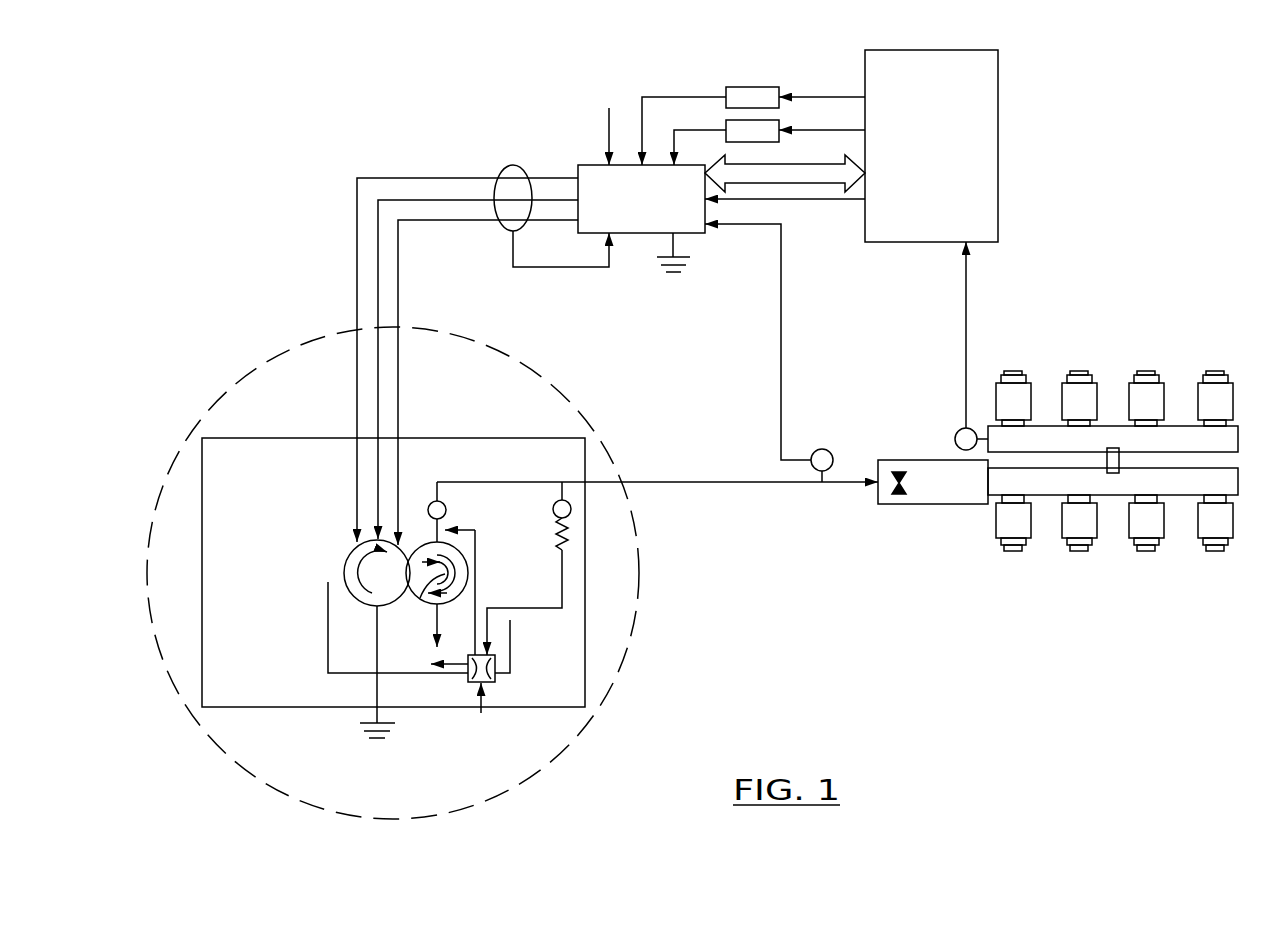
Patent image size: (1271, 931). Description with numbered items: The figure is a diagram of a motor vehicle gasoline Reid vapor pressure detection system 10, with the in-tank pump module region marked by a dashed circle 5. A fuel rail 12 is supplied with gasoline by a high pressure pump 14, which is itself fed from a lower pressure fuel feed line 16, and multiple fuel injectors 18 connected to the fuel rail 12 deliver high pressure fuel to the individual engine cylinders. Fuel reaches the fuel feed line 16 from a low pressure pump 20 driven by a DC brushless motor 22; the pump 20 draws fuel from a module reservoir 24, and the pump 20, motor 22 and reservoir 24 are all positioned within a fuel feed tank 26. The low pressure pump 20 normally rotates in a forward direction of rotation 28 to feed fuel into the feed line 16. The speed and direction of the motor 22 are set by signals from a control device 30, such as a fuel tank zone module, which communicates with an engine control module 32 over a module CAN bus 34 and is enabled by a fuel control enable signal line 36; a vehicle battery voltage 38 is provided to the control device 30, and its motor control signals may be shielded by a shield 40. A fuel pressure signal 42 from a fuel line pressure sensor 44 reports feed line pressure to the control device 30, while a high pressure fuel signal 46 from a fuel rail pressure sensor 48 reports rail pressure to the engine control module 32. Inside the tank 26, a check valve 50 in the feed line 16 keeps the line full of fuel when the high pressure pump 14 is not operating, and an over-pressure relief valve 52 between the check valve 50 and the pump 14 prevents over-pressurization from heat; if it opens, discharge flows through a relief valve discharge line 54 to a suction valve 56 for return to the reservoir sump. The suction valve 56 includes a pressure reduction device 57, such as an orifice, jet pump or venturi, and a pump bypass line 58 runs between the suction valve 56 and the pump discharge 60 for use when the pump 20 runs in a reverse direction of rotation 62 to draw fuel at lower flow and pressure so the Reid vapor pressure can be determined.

The gasoline RVP detection system 10 is at (1185, 130).
The pump module 5 is at (580, 410).
The fuel rail 12 is at (997, 483).
The high pressure pump 14 is at (937, 488).
The fuel feed line 16 is at (673, 480).
The fuel injectors 18 is at (1064, 403).
The low pressure pump 20 is at (420, 553).
The DC brushless motor 22 is at (372, 592).
The module reservoir 24 is at (328, 618).
The fuel feed tank 26 is at (457, 437).
The forward direction of rotation 28 is at (443, 587).
The control device 30 is at (634, 207).
The engine control module 32 is at (975, 121).
The module CAN bus 34 is at (797, 173).
The fuel control enable signal line 36 is at (850, 199).
The vehicle battery voltage 38 is at (609, 128).
The shield 40 is at (502, 232).
The fuel pressure signal 42 is at (781, 316).
The fuel line pressure sensor 44 is at (833, 458).
The high pressure fuel signal 46 is at (967, 300).
The fuel rail pressure sensor 48 is at (955, 437).
The check valve 50 is at (446, 510).
The over-pressure relief valve 52 is at (553, 510).
The relief valve discharge line 54 is at (527, 605).
The suction valve 56 is at (497, 682).
The pressure reduction device 57 is at (473, 682).
The pump bypass line 58 is at (477, 556).
The pump discharge 60 is at (441, 527).
The reverse direction of rotation 62 is at (412, 600).